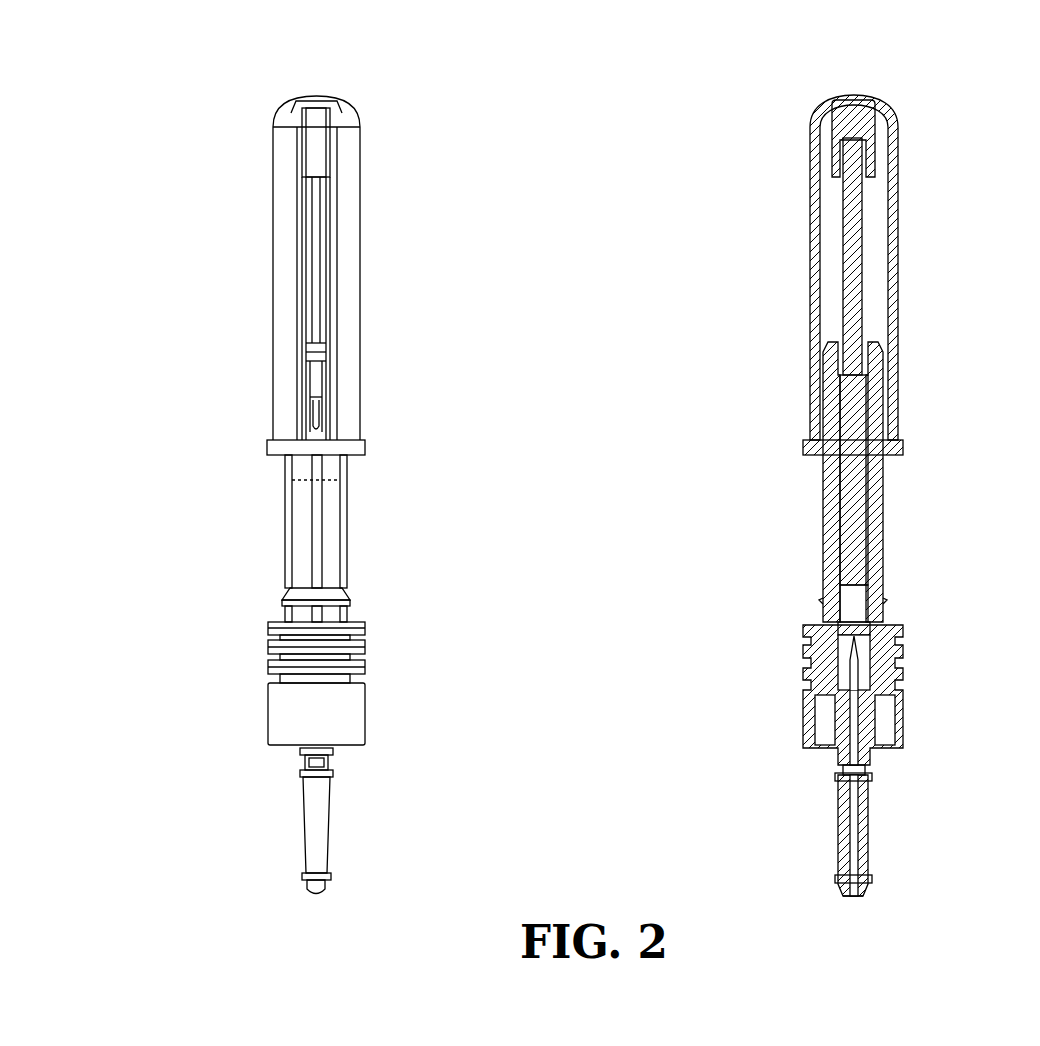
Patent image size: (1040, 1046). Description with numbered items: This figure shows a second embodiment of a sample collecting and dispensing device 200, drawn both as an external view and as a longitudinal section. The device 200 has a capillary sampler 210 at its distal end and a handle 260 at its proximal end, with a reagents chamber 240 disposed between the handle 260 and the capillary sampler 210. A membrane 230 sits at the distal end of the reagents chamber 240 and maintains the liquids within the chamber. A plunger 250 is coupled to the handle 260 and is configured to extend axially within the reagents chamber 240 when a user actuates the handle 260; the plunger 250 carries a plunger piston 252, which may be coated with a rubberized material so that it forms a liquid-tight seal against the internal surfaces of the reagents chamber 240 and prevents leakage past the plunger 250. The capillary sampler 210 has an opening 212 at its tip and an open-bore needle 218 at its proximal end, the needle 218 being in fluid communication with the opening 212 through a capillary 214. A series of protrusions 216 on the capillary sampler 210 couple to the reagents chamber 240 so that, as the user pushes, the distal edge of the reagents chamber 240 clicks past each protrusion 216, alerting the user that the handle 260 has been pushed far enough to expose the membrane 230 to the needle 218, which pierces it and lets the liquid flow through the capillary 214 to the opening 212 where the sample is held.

The sample collecting and dispensing device 200 is at (236, 97).
The handle 260 is at (272, 202).
The capillary sampler 210 is at (292, 818).
The plunger 250 is at (878, 290).
The plunger piston 252 is at (878, 397).
The reagents chamber 240 is at (827, 485).
The membrane 230 is at (881, 637).
The open-bore needle 218 is at (840, 652).
The protrusions 216 is at (903, 700).
The capillary 214 is at (878, 812).
The opening 212 is at (876, 898).